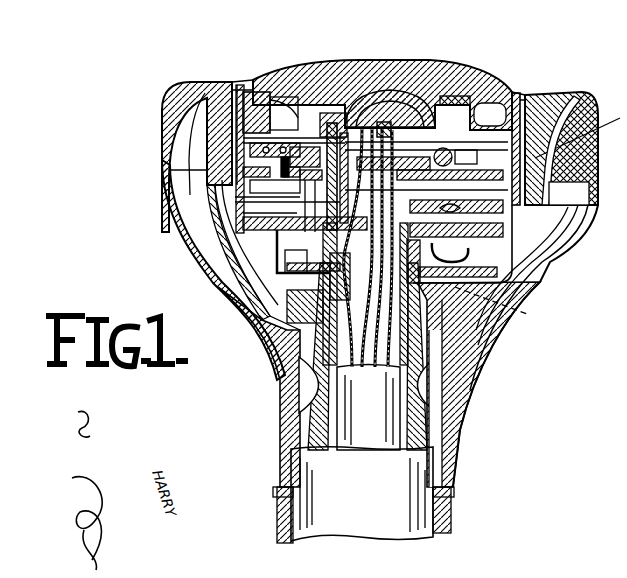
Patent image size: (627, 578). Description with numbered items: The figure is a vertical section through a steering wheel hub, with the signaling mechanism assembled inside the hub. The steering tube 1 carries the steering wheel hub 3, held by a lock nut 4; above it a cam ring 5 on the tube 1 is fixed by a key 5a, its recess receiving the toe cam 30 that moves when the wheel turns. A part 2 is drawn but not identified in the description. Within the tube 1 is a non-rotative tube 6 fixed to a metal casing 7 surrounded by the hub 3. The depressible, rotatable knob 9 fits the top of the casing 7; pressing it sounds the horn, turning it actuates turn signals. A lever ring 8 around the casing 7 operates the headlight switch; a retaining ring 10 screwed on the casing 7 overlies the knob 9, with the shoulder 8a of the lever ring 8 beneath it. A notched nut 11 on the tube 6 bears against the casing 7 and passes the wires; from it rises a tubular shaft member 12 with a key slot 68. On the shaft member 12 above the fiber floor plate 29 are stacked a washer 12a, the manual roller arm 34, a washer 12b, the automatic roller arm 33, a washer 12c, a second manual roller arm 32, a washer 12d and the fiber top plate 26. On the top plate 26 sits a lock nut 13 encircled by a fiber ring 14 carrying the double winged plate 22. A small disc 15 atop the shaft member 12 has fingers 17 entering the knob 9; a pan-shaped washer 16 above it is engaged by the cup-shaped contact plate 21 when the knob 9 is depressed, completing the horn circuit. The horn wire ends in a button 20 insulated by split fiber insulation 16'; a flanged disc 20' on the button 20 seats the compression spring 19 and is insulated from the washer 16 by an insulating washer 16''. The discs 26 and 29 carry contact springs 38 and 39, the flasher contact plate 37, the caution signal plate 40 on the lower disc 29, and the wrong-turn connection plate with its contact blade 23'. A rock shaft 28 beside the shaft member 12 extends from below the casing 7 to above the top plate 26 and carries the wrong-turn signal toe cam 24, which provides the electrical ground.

The steering tube 1 is at (415, 515).
The ball socket insert 2 is at (430, 397).
The steering wheel hub 3 is at (455, 367).
The lock nut 4 is at (310, 305).
The cam ring 5 is at (310, 290).
The key 5a is at (510, 308).
The non-rotative tube 6 is at (385, 423).
The metal cup or casing 7 is at (520, 290).
The lever ring 8 is at (580, 93).
The inwardly projecting shoulder 8a is at (240, 160).
The manual control knob 9 is at (447, 78).
The retaining ring 10 is at (515, 92).
The nut 11 is at (520, 270).
The tubular shaft member 12 is at (310, 270).
The thin metal washer 12a is at (555, 300).
The thin spacing washer 12b is at (300, 205).
The washer 12c is at (293, 187).
The spacer washer 12d is at (233, 147).
The lock nut 13 is at (398, 100).
The fiber ring 14 is at (470, 125).
The small metal disc 15 is at (330, 110).
The pan-shaped washer 16 is at (300, 98).
The split fiber insulation 16' is at (426, 103).
The insulating washer 16'' is at (426, 123).
The upturned lugs or fingers 17 is at (338, 112).
The compression spring 19 is at (370, 115).
The rivet-shaped metal button 20 is at (393, 102).
The spring seat disc 20' is at (450, 118).
The contact plate 21 is at (467, 92).
The double winged plate 22 is at (303, 110).
The contact blade or lug 23' is at (260, 143).
The wrong-turn signal toe cam 24 is at (252, 98).
The fiber disc or top plate 26 is at (293, 160).
The rock shaft 28 is at (300, 250).
The fiber disc or floor plate 29 is at (290, 227).
The toe cam 30 is at (300, 282).
The second manually operated roller arm 32 is at (235, 192).
The automatic roller arm 33 is at (480, 207).
The manually controlled roller arm 34 is at (540, 228).
The flasher signal contact plate 37 is at (480, 176).
The contact spring 38 is at (452, 158).
The contact spring 39 is at (507, 230).
The caution signal contact plate 40 is at (445, 243).
The key slot 68 is at (300, 248).